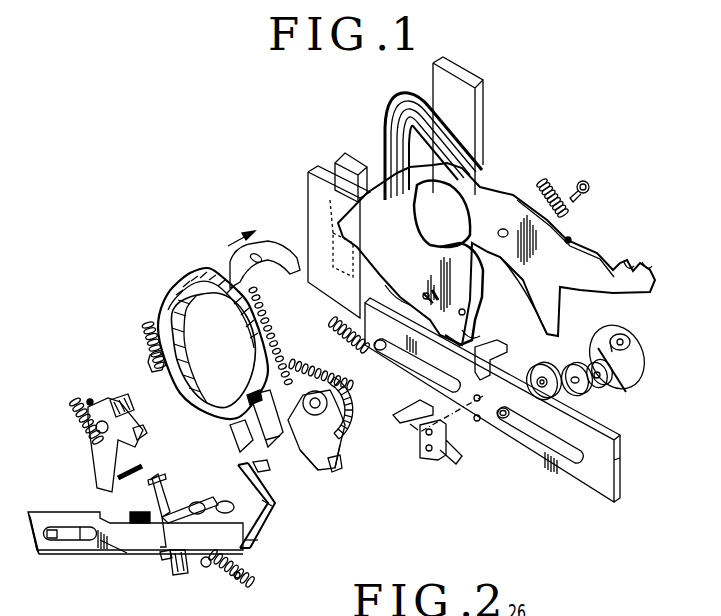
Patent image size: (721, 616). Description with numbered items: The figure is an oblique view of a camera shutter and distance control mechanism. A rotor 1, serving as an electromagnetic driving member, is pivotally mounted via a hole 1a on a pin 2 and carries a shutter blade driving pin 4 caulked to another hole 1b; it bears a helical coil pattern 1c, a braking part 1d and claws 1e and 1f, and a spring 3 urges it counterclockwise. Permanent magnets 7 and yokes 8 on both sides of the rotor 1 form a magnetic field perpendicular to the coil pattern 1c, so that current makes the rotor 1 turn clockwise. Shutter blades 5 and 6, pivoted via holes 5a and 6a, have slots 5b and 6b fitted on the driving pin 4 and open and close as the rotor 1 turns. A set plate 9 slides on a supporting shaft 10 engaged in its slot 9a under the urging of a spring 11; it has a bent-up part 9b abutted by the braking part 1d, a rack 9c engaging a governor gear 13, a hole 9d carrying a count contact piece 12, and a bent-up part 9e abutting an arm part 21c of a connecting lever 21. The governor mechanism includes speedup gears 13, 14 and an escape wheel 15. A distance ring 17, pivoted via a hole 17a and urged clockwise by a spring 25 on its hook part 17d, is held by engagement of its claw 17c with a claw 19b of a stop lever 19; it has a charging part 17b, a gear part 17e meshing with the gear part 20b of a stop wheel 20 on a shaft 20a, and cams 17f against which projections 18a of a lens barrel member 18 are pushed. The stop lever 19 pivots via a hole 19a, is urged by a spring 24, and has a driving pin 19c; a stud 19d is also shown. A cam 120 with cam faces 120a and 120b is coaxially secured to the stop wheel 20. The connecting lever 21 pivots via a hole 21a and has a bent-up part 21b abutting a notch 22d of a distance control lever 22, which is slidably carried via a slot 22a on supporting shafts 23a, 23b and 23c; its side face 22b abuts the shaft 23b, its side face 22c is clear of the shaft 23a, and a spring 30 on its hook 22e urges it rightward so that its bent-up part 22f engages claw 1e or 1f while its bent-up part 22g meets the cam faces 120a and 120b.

The rotor 1 is at (505, 200).
The hole 1a is at (508, 237).
The hole 1b is at (572, 242).
The coil pattern 1c is at (393, 143).
The braking part 1d is at (537, 320).
The claw 1e is at (628, 260).
The claw 1f is at (650, 260).
The pin 2 is at (584, 180).
The spring 3 is at (545, 178).
The shutter blade driving pin 4 is at (439, 291).
The shutter blade 5 is at (486, 262).
The hole 5a is at (465, 335).
The slot 5b is at (425, 293).
The shutter blade 6 is at (455, 210).
The hole 6a is at (400, 298).
The slot 6b is at (463, 312).
The permanent magnets 7 is at (330, 180).
The yokes 8 is at (440, 95).
The set plate 9 is at (565, 474).
The slot 9a is at (400, 406).
The bent-up part 9b is at (500, 363).
The rack 9c is at (622, 441).
The hole 9d is at (477, 424).
The bent-up part 9e is at (412, 428).
The supporting shaft 10 is at (407, 363).
The spring 11 is at (338, 320).
The count contact piece 12 is at (436, 462).
The speedup gear 13 is at (550, 368).
The speedup gear 14 is at (584, 398).
The escape wheel 15 is at (607, 390).
The distance ring 17 is at (182, 292).
The hole 17a is at (173, 310).
The charging part 17b is at (268, 448).
The claw 17c is at (232, 438).
The hook part 17d is at (150, 352).
The gear part 17e is at (277, 315).
The cams 17f is at (209, 270).
The member 18 is at (277, 240).
The projections 18a is at (255, 253).
The stop lever 19 is at (121, 400).
The hole 19a is at (104, 404).
The claw 19b is at (143, 430).
The driving pin 19c is at (147, 468).
The stud 19d is at (90, 405).
The stop wheel 20 is at (335, 457).
The shaft 20a is at (305, 364).
The gear part 20b is at (350, 428).
The connecting lever 21 is at (165, 487).
The hole 21a is at (173, 570).
The bent-up part 21b is at (155, 476).
The arm part 21c is at (167, 557).
The distance control lever 22 is at (132, 552).
The slot 22a is at (37, 560).
The side face 22b is at (203, 567).
The side face 22c is at (257, 542).
The notch 22d is at (78, 526).
The hook 22e is at (127, 553).
The bent-up part 22f is at (186, 562).
The bent-up part 22g is at (268, 507).
The supporting shaft 23a is at (267, 542).
The supporting shaft 23b is at (238, 579).
The supporting shaft 23c is at (65, 530).
The spring 24 is at (74, 438).
The spring 25 is at (146, 342).
The spring 30 is at (252, 582).
The cam 120 is at (320, 467).
The cam face 120a is at (342, 470).
The cam face 120b is at (333, 473).